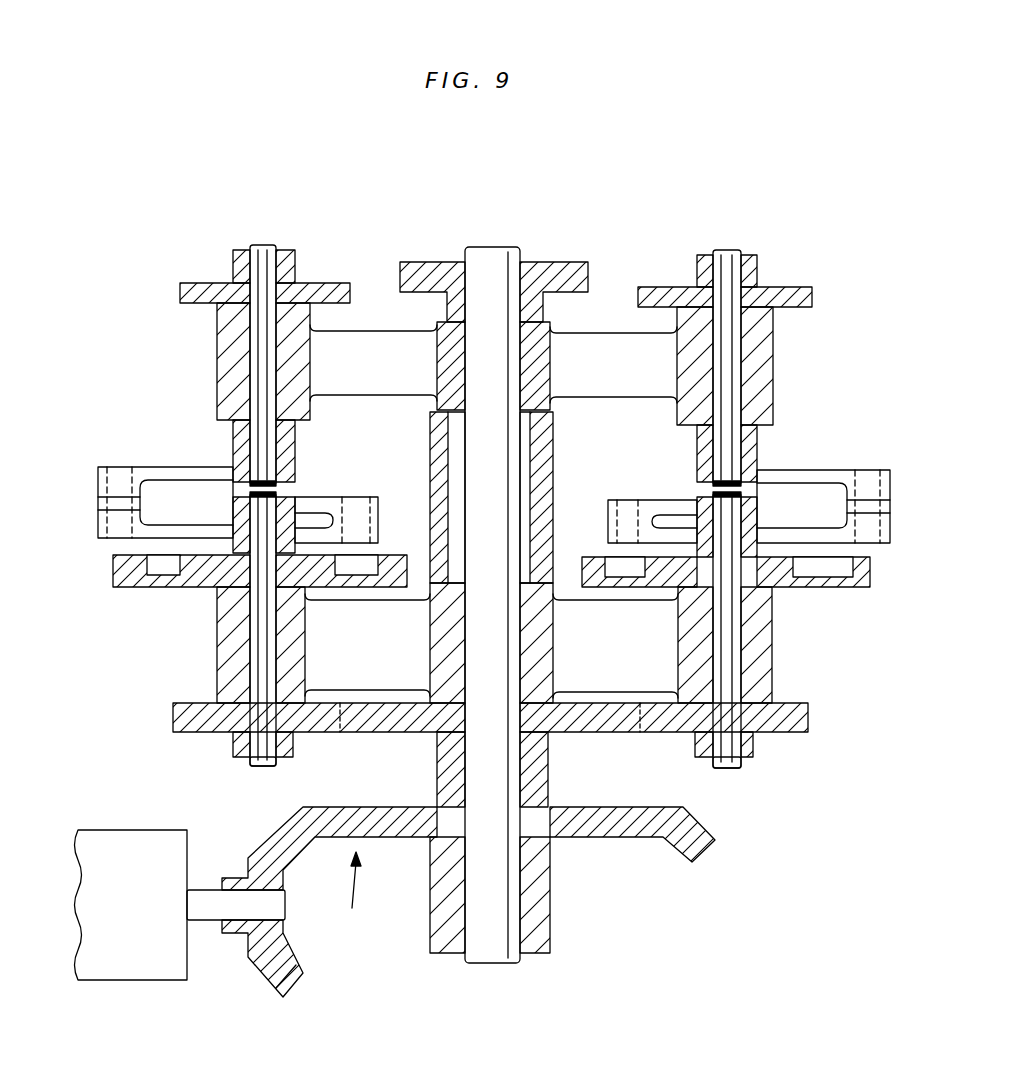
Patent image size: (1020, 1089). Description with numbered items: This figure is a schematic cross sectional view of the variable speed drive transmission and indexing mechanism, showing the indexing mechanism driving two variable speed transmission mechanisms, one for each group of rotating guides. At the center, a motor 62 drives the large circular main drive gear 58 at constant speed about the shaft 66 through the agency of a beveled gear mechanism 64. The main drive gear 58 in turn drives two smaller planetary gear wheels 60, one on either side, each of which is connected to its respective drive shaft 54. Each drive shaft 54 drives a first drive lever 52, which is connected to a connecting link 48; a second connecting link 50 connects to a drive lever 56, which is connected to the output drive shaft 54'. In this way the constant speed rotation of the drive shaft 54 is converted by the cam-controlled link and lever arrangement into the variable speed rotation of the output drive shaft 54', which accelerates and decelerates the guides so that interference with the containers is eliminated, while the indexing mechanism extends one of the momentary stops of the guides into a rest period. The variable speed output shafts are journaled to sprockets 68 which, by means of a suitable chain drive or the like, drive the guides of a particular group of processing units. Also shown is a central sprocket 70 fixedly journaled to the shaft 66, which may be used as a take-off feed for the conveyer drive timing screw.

The connecting link 48 is at (156, 533).
The second connecting link 50 is at (106, 497).
The first drive lever 52 is at (330, 497).
The drive shaft 54 is at (496, 645).
The output drive shaft 54' is at (499, 364).
The drive lever 56 is at (178, 466).
The main drive gear 58 is at (616, 722).
The planetary gear wheels 60 is at (213, 732).
The motor 62 is at (144, 920).
The beveled gear mechanism 64 is at (374, 885).
The shaft 66 is at (498, 914).
The sprockets 68 is at (330, 283).
The central sprocket 70 is at (553, 262).